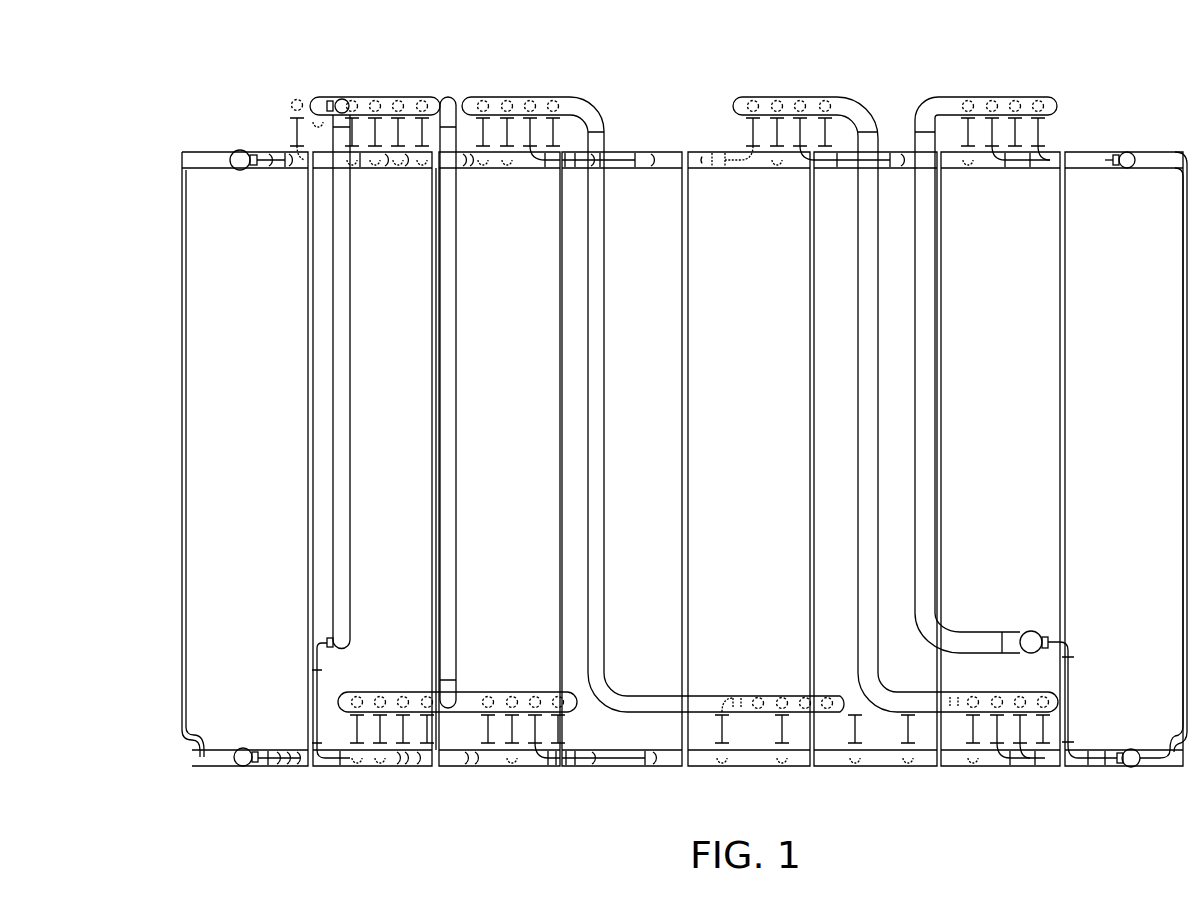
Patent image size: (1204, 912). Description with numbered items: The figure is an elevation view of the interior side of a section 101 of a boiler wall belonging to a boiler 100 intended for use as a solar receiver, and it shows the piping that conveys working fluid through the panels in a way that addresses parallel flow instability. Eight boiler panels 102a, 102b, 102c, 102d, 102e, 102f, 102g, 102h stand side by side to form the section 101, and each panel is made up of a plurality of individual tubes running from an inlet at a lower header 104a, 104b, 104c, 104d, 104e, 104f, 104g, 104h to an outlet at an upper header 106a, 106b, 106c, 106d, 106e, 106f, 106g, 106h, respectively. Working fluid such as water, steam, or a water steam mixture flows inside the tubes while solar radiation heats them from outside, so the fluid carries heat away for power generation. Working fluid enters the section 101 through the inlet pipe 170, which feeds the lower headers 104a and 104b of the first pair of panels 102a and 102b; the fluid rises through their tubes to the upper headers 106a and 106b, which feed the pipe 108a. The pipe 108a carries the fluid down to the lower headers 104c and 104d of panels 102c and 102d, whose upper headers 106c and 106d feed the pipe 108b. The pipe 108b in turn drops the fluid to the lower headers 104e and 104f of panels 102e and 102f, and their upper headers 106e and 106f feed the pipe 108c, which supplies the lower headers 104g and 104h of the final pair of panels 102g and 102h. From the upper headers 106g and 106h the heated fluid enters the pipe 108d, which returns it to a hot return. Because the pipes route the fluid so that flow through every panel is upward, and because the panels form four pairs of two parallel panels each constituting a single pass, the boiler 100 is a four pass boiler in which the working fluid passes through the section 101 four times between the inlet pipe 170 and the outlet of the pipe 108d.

The boiler 100 is at (688, 86).
The section of a boiler wall 101 is at (188, 469).
The boiler panel 102a is at (264, 277).
The boiler panel 102b is at (410, 277).
The boiler panel 102c is at (528, 277).
The boiler panel 102d is at (661, 277).
The boiler panel 102e is at (764, 277).
The boiler panel 102f is at (856, 277).
The boiler panel 102g is at (1021, 277).
The boiler panel 102h is at (1140, 277).
The lower header 104a is at (261, 768).
The lower header 104b is at (393, 768).
The lower header 104c is at (525, 768).
The lower header 104d is at (651, 768).
The lower header 104e is at (773, 768).
The lower header 104f is at (910, 768).
The lower header 104g is at (1020, 768).
The lower header 104h is at (1138, 768).
The upper header 106a is at (268, 150).
The upper header 106b is at (404, 150).
The upper header 106c is at (510, 150).
The upper header 106d is at (660, 150).
The upper header 106e is at (724, 150).
The upper header 106f is at (896, 150).
The upper header 106g is at (972, 150).
The upper header 106h is at (1114, 150).
The pipe 108a is at (458, 442).
The pipe 108b is at (605, 442).
The pipe 108c is at (857, 385).
The pipe 108d is at (936, 384).
The inlet pipe 170 is at (380, 692).